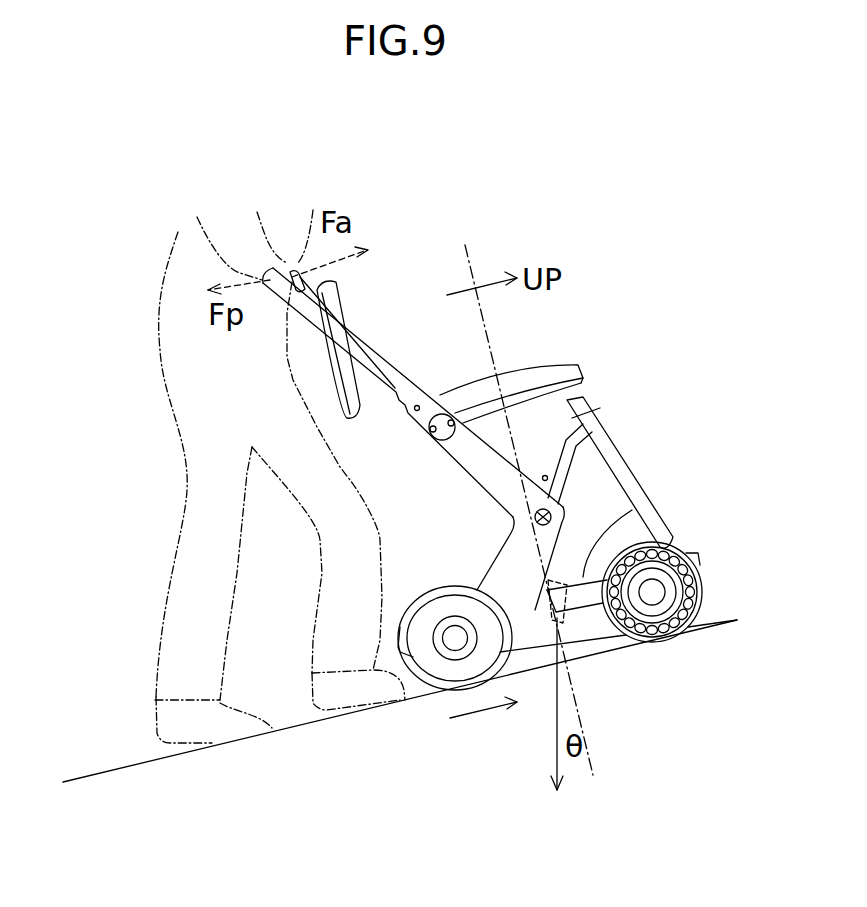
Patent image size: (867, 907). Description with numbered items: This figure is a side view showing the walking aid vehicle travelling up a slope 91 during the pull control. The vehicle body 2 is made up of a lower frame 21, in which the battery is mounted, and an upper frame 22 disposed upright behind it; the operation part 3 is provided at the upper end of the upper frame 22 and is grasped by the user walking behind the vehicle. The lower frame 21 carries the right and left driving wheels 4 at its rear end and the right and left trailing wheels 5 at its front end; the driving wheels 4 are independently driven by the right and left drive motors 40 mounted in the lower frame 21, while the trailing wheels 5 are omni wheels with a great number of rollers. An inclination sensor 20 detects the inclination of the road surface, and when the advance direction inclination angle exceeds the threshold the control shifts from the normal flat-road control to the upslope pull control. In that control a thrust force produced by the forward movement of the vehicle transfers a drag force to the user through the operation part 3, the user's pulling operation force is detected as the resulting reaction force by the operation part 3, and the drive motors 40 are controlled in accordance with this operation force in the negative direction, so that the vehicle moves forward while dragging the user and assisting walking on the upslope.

The operation part 3 is at (267, 267).
The upper frame 22 is at (444, 458).
The vehicle body 2 is at (633, 487).
The lower frame 21 is at (648, 498).
The inclination sensor 20 is at (580, 612).
The trailing wheels 5 is at (689, 634).
The driving wheels 4 is at (446, 675).
The drive motors 40 is at (400, 667).
The inclined ground surface 91 is at (728, 618).